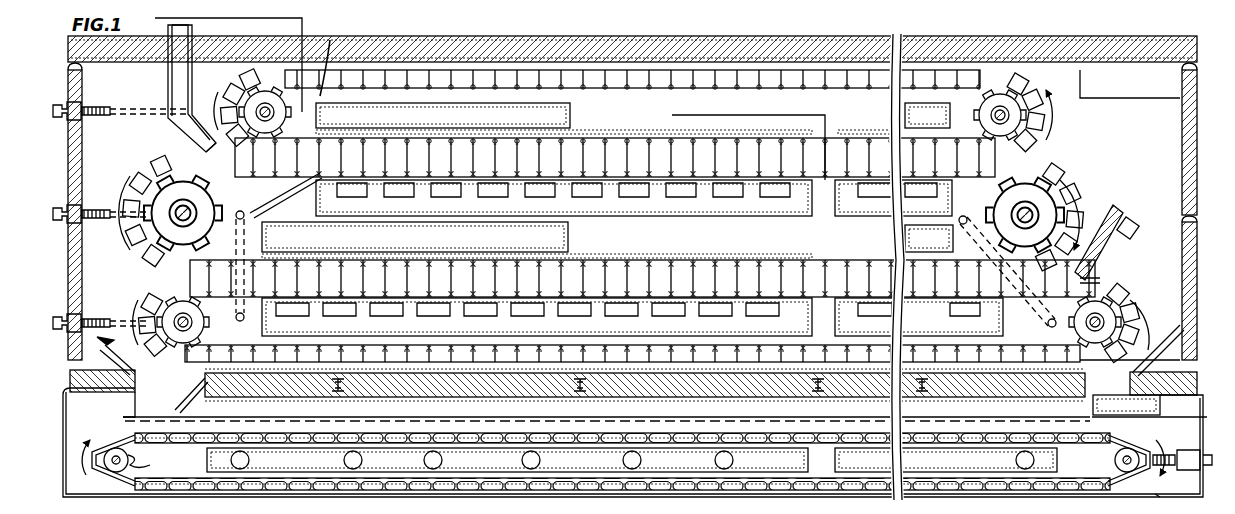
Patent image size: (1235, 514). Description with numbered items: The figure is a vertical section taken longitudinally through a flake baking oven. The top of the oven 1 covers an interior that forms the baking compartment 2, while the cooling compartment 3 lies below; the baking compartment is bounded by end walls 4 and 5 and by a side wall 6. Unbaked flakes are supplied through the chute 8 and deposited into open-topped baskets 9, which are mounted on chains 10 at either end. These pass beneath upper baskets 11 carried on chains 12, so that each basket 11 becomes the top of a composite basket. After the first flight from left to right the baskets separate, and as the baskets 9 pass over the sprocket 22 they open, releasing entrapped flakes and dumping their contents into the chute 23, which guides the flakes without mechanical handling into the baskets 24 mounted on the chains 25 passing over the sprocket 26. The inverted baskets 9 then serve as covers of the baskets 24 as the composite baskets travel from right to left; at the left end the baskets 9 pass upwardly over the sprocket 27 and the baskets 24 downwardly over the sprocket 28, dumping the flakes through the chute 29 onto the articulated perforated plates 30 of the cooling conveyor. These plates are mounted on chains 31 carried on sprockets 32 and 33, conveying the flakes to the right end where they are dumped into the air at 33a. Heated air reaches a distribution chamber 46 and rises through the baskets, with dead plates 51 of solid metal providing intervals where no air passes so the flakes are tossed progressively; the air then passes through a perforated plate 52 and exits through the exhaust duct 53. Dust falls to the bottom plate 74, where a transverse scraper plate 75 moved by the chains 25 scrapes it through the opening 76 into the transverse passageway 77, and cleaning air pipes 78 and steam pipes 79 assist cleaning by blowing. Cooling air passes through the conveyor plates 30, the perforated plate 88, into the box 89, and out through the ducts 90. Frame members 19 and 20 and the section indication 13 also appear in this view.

The top of the oven 1 is at (716, 50).
The baking compartment 2 is at (352, 357).
The cooling compartment 3 is at (68, 18).
The end wall 4 is at (1180, 186).
The end wall 5 is at (68, 158).
The side wall 6 is at (1104, 200).
The chute 8 is at (168, 78).
The baskets 9 is at (230, 138).
The chains 10 is at (246, 172).
The upper baskets 11 is at (238, 80).
The chains 12 is at (336, 38).
The section line 13- 13 is at (118, 423).
The lower frame member 19 is at (664, 511).
The lower frame member 20 is at (652, 511).
The sprocket 22 is at (1040, 198).
The chute 23 is at (1104, 216).
The baskets 24 is at (1090, 278).
The chains 25 is at (1132, 290).
The sprocket 26 is at (1072, 326).
The sprocket 27 is at (220, 206).
The sprocket 28 is at (146, 348).
The chute 29 is at (186, 402).
The articulated perforated plates 30 is at (206, 432).
The chains 31 is at (200, 444).
The sprocket 32 is at (150, 466).
The sprocket 33 is at (1108, 462).
The dumping point 33a is at (1158, 494).
The distribution chamber 46 is at (672, 206).
The dead plates 51 is at (426, 194).
The perforated plate 52 is at (760, 130).
The exhaust duct 53 is at (532, 121).
The bottom plate 74 is at (514, 372).
The transverse scraper plate 75 is at (1086, 360).
The opening 76 is at (1142, 402).
The transverse passageway 77 is at (1135, 421).
The cleaning pipes 78 is at (748, 340).
The steam pipes 79 is at (262, 238).
The perforated plate 88 is at (392, 452).
The box 89 is at (322, 462).
The ducts 90 is at (249, 460).